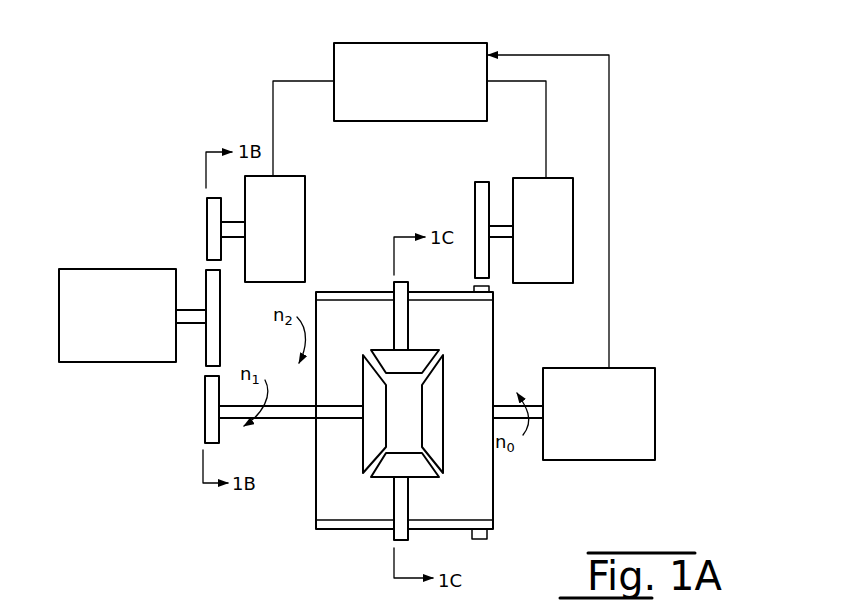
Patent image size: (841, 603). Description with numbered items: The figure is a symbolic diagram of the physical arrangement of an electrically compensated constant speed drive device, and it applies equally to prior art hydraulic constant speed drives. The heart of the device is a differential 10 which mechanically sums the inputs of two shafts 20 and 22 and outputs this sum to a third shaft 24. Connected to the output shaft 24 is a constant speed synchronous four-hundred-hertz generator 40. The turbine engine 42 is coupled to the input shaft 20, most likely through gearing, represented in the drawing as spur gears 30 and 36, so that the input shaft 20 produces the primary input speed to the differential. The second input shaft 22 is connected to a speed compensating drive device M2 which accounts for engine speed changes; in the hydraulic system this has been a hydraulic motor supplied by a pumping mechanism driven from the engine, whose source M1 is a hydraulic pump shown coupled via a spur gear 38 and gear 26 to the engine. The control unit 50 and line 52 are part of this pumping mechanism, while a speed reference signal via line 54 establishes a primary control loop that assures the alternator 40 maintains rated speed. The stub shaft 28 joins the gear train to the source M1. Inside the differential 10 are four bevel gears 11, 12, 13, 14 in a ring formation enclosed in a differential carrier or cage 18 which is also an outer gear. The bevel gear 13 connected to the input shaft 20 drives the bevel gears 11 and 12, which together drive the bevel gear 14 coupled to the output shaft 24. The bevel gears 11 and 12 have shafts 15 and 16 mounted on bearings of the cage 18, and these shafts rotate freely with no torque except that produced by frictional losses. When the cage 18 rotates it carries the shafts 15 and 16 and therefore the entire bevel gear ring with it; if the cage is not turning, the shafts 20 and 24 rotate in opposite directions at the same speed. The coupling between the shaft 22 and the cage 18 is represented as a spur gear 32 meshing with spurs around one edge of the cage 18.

The differential 10 is at (351, 424).
The bevel gear 11 is at (383, 478).
The bevel gear 12 is at (421, 350).
The bevel gear 13 is at (364, 375).
The bevel gear 14 is at (422, 411).
The shaft 15 is at (394, 322).
The shaft 16 is at (408, 503).
The differential carrier or cage 18 is at (358, 292).
The input shaft 20 is at (297, 419).
The second input shaft 22 is at (498, 225).
The output shaft 24 is at (536, 420).
The gear 26 is at (183, 310).
The source shaft stub 28 is at (229, 238).
The spur gear 30 is at (205, 410).
The spur gear 32 is at (475, 222).
The spur gear 36 is at (220, 346).
The spur gear 38 is at (207, 226).
The constant speed synchronous 400 Hz generator 40 is at (655, 410).
The turbine engine 42 is at (90, 269).
The control unit 50 is at (457, 43).
The line 52 is at (275, 80).
The line 54 is at (610, 233).
The source M1 is at (305, 196).
The speed compensating drive device M2 is at (553, 178).